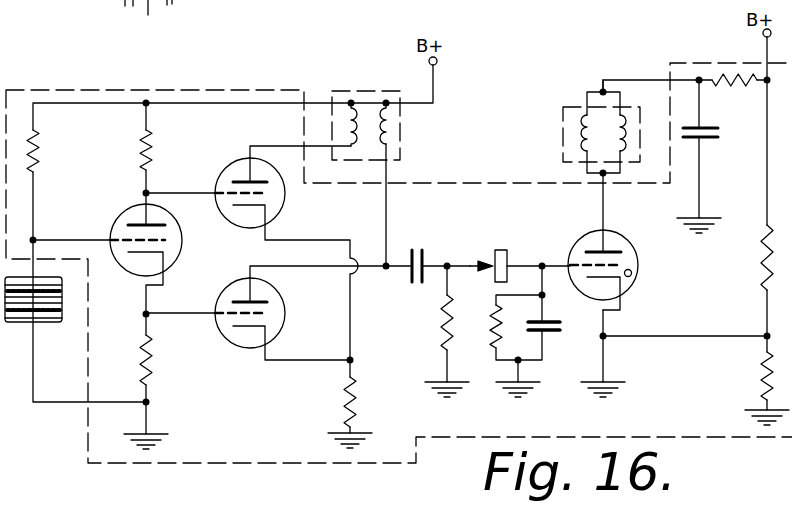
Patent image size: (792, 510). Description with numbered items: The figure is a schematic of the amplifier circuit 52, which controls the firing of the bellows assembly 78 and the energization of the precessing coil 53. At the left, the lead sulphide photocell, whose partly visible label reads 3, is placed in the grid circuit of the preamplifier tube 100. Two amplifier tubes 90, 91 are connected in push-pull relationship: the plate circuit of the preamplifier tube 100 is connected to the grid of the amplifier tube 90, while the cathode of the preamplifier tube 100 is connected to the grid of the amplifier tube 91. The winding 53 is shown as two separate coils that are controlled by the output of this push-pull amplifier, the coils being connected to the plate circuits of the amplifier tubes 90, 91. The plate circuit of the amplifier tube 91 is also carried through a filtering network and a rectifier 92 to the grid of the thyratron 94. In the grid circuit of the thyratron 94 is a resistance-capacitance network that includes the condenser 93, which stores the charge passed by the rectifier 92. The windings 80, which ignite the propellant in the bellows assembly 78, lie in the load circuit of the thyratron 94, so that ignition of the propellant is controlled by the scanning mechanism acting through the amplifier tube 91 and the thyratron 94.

The photocell 3 is at (27, 319).
The amplifier circuit 52 is at (92, 81).
The precessing coil 53 is at (370, 90).
The bellows assembly 78 is at (563, 137).
The windings 80 is at (603, 92).
The amplifier tube 90 is at (283, 203).
The amplifier tube 91 is at (280, 292).
The rectifier 92 is at (506, 250).
The condenser 93 is at (548, 333).
The thyratron 94 is at (637, 283).
The preamplifier tube 100 is at (181, 244).